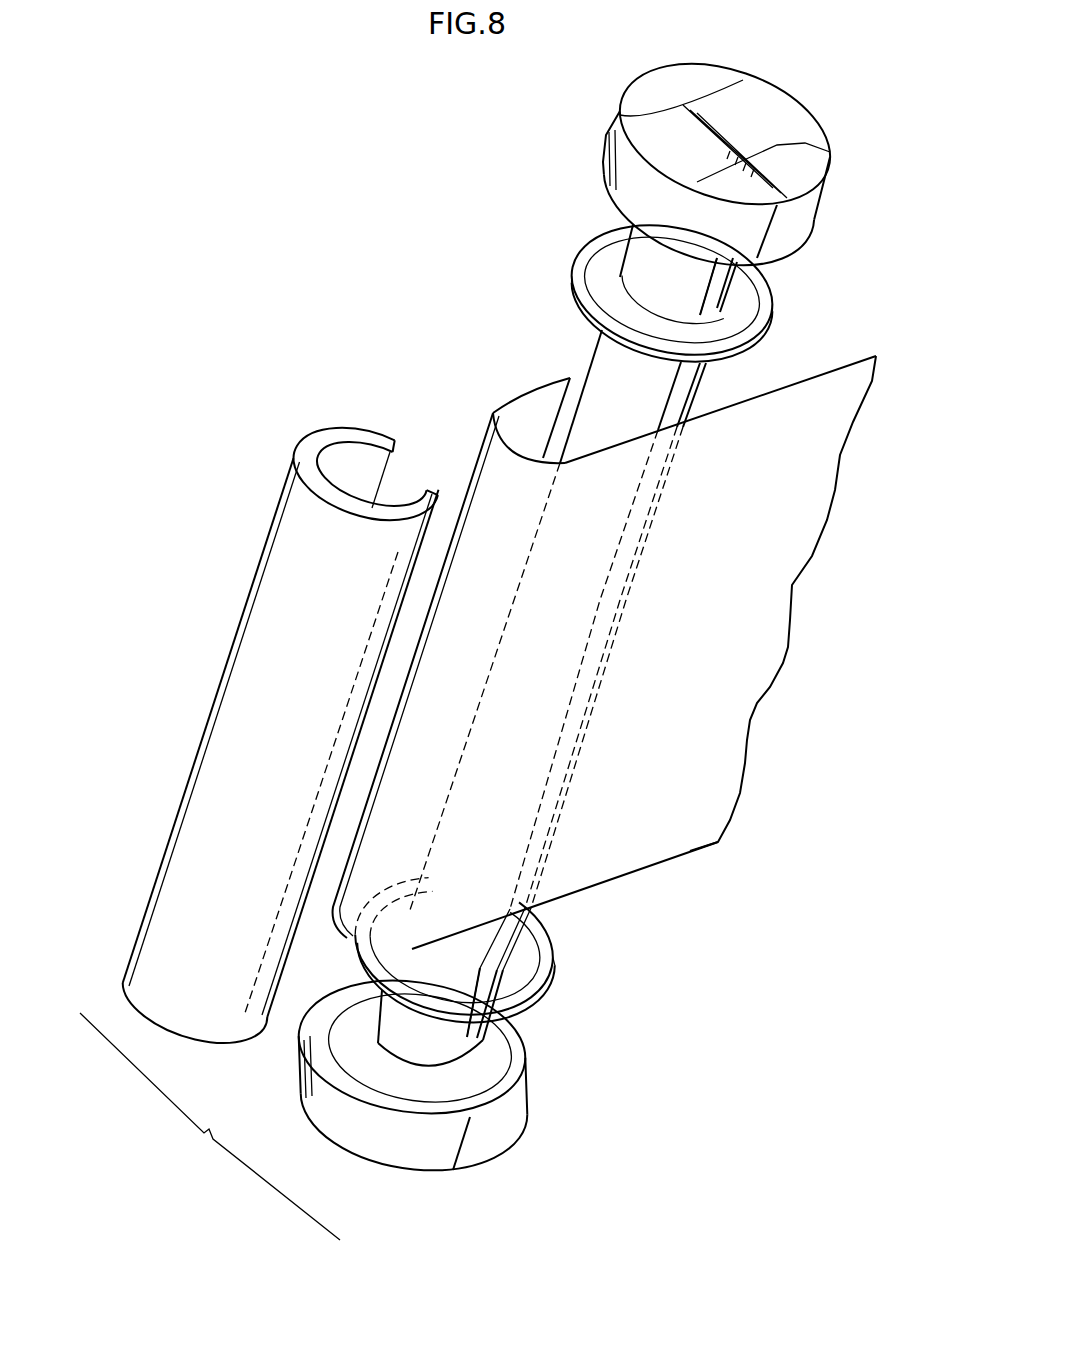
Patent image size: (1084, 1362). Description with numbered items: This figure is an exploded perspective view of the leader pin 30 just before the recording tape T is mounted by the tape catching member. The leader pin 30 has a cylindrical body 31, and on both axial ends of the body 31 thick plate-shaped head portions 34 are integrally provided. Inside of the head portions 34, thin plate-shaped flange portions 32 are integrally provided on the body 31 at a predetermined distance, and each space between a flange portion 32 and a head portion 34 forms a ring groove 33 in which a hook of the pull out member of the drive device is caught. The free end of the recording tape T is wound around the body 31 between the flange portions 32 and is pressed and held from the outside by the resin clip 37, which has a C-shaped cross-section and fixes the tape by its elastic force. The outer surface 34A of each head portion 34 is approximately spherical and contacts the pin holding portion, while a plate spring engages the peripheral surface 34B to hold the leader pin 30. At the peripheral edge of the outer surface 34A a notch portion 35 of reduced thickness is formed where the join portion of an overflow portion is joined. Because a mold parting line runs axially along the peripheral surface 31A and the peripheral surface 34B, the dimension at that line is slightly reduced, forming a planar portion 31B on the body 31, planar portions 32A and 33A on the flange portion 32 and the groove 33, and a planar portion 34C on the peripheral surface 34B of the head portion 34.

The leader pin 30 is at (418, 290).
The body 31 is at (559, 648).
The peripheral surface 31A is at (520, 630).
The planar portion 31B is at (628, 578).
The flange portion 32 is at (581, 627).
The planar portion 32A is at (734, 354).
The ring groove 33 is at (567, 633).
The planar portion 33A is at (717, 287).
The head portion 34 is at (551, 623).
The outer surface 34A is at (764, 104).
The peripheral surface 34B is at (636, 193).
The planar portion 34C is at (795, 224).
The notch portion 35 is at (658, 92).
The clip 37 is at (252, 632).
The recording tape T is at (714, 734).